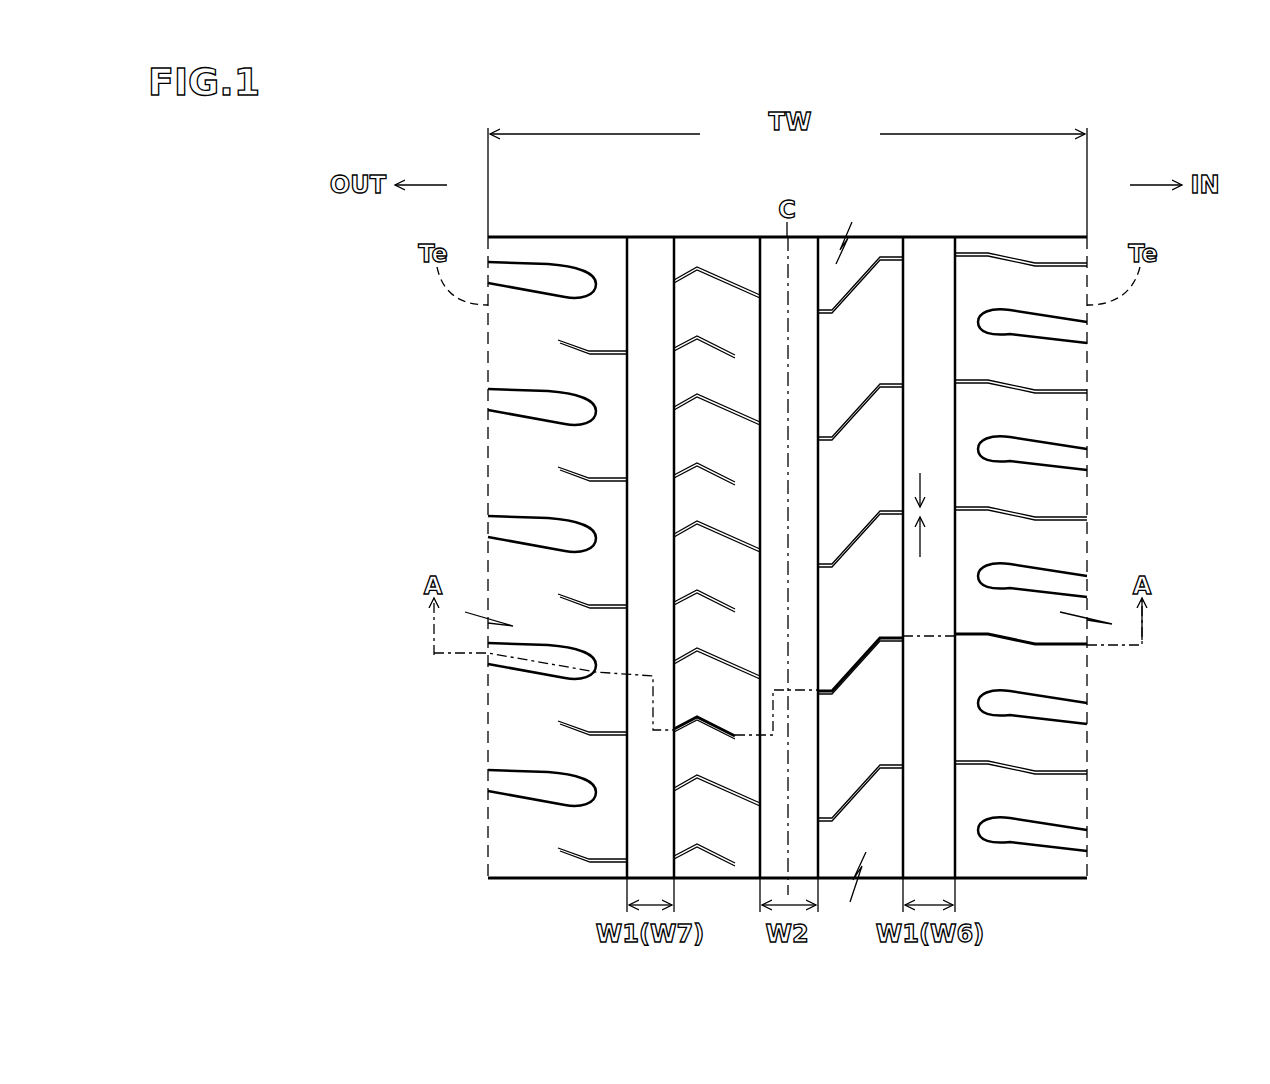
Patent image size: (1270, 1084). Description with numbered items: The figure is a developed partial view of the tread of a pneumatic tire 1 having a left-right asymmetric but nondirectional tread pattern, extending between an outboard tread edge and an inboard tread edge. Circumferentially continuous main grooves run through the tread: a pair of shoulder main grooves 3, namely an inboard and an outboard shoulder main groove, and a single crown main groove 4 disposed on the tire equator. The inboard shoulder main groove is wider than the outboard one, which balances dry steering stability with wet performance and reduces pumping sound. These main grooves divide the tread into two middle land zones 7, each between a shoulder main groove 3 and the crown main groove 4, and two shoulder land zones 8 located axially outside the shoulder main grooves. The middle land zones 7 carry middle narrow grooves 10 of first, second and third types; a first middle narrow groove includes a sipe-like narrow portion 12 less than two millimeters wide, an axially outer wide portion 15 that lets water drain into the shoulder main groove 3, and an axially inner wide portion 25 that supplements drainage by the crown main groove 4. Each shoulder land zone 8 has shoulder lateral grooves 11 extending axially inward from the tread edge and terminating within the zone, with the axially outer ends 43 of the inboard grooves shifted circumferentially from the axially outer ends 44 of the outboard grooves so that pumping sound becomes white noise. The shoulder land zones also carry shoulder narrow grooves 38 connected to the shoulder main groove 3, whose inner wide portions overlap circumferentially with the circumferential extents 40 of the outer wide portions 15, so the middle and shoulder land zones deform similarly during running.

The pneumatic tire 1 is at (964, 214).
The shoulder main groove 3 is at (651, 304).
The crown main groove 4 is at (771, 304).
The middle land zone 7 is at (721, 309).
The shoulder land zone 8 is at (555, 307).
The middle narrow groove 10 is at (710, 526).
The shoulder lateral groove 11 is at (530, 395).
The sipe-like narrow portion 12 is at (1032, 392).
The axially outer wide portion 15 is at (895, 518).
The axially inner wide portion 25 is at (970, 383).
The shoulder narrow groove 38 is at (1190, 333).
The circumferential extent 40 is at (913, 512).
The axially outer end 43 is at (1087, 462).
The axially outer end 44 is at (488, 395).